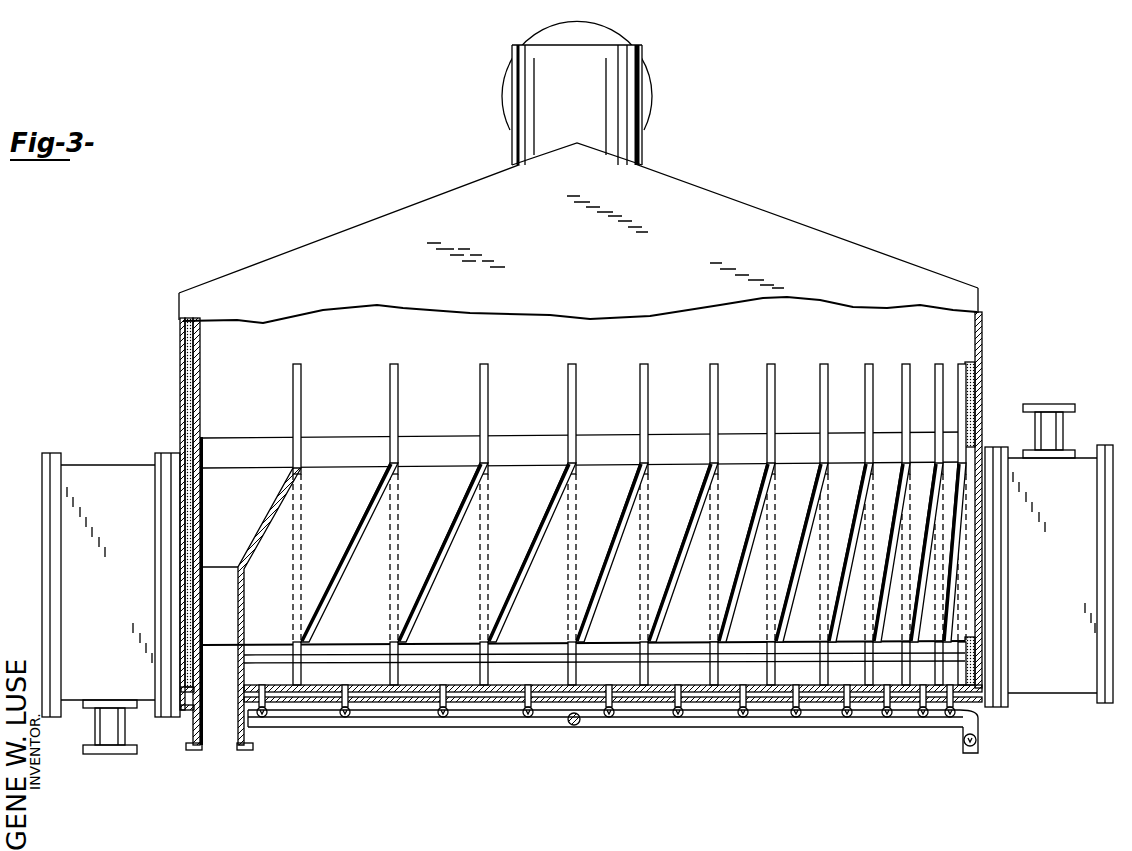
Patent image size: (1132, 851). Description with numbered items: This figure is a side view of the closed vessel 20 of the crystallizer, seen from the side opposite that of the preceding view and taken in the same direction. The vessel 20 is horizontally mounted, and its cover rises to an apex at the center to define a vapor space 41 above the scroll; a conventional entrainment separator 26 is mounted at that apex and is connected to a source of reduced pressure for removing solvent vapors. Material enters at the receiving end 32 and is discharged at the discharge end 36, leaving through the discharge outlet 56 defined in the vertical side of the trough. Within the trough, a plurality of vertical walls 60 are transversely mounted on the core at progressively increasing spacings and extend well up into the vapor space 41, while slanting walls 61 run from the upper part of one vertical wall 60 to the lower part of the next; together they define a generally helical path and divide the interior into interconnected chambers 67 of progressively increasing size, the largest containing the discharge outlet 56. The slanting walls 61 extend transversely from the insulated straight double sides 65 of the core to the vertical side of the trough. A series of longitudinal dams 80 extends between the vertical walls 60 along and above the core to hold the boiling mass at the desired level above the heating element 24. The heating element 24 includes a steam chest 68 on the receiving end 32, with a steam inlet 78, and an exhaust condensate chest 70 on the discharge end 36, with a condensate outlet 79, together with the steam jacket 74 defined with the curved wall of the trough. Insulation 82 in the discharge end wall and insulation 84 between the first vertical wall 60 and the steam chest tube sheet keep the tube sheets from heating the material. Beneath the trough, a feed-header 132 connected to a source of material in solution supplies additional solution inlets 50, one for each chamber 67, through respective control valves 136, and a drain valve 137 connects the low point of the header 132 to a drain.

The closed vessel 20 is at (770, 248).
The entrainment separator 26 is at (563, 138).
The vapor space 41 is at (290, 350).
The receiving end 32 is at (978, 340).
The discharge end 36 is at (182, 370).
The insulation 82 is at (188, 380).
The insulation 84 is at (980, 418).
The exhaust condensate chest 70 is at (92, 488).
The condensate outlet 79 is at (112, 732).
The steam chest 68 is at (1043, 667).
The heating element 24 is at (1090, 665).
The steam inlet 78 is at (1048, 427).
The longitudinal dams 80 is at (365, 452).
The straight double sides 65 is at (685, 436).
The interconnected chambers 67 is at (615, 407).
The vertical walls 60 is at (480, 402).
The slanting walls 61 is at (450, 534).
The discharge outlet 56 is at (245, 495).
The steam jacket 74 is at (773, 702).
The additional solution inlets 50 is at (438, 697).
The control valves 136 is at (517, 707).
The feed-header 132 is at (713, 717).
The drain valve 137 is at (962, 740).